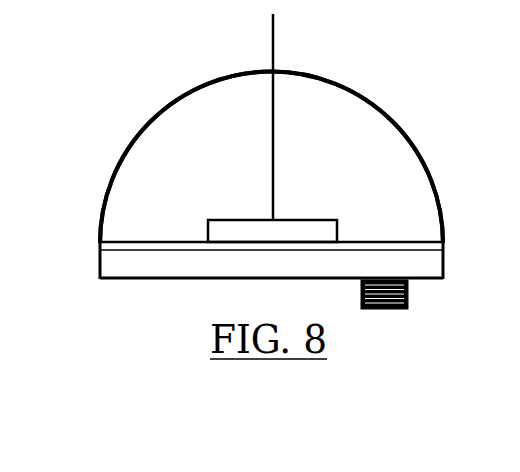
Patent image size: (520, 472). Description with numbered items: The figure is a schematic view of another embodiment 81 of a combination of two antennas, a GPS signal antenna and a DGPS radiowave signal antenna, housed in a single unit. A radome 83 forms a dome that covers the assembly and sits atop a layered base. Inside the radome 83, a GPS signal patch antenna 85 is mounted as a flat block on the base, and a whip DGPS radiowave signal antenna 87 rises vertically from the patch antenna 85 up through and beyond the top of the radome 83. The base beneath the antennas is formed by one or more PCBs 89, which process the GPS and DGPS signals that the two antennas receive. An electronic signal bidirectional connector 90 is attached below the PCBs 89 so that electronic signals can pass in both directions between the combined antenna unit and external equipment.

The embodiment of a combination of the two antennas 81 is at (142, 81).
The radome 83 is at (388, 112).
The GPS signal patch antenna 85 is at (298, 232).
The whip DGPS radiowave signal antenna 87 is at (275, 53).
The PCBs 89 is at (98, 247).
The electronic signal bidirectional connector 90 is at (408, 294).